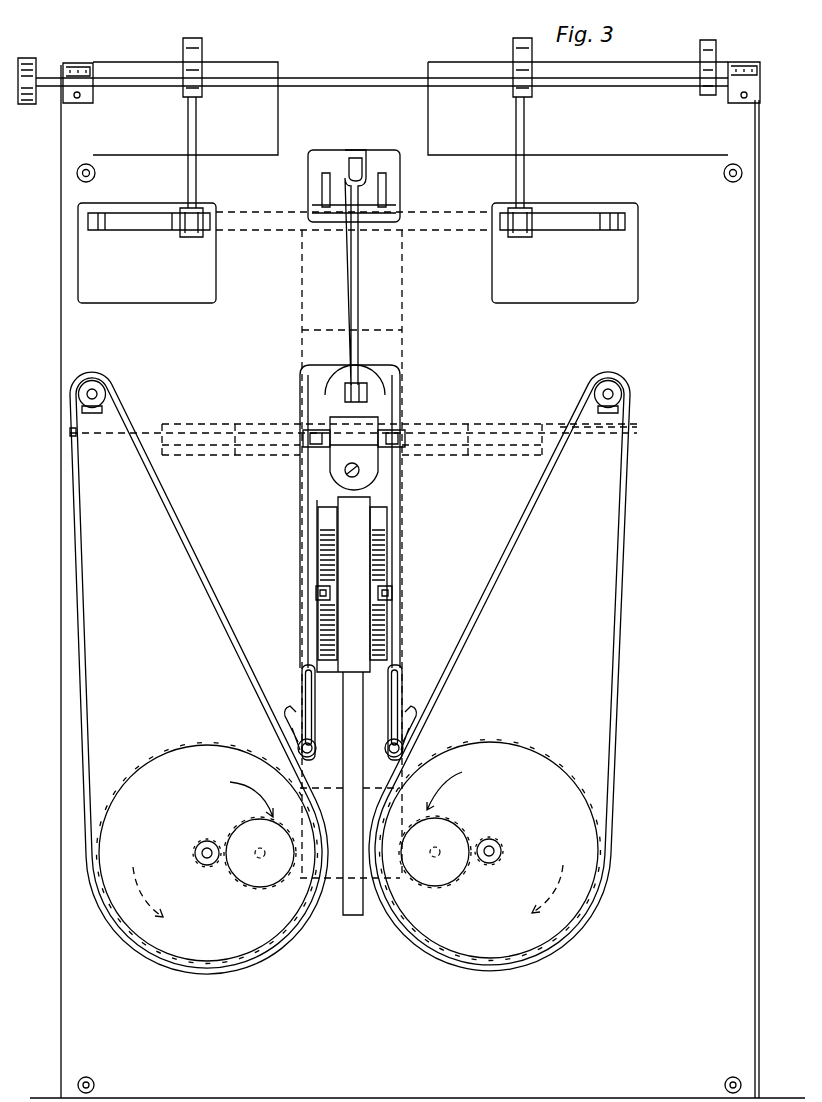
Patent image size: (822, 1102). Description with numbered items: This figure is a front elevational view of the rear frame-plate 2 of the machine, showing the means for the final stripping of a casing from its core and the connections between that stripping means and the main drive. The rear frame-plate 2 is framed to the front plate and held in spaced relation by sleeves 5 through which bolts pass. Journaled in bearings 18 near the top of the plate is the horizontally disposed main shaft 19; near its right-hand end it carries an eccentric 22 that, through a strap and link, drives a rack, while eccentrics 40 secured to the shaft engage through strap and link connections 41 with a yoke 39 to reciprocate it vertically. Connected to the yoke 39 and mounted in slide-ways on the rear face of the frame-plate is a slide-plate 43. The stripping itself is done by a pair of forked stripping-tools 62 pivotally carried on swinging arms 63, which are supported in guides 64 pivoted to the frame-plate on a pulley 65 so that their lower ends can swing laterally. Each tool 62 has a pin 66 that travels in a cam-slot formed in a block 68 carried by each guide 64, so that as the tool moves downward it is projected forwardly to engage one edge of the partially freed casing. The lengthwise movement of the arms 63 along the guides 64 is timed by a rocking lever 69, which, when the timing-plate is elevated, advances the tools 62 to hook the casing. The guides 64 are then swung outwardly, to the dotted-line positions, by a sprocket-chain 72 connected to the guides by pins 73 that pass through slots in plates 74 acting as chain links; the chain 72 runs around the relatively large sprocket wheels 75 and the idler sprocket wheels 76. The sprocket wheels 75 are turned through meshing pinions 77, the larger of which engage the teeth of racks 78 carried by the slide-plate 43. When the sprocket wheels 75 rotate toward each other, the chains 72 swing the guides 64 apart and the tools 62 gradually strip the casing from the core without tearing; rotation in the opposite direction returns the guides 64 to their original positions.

The rear frame-plate 2 is at (630, 439).
The sleeves 5 is at (96, 175).
The bearings 18 is at (96, 71).
The main shaft 19 is at (616, 88).
The eccentric 22 is at (722, 42).
The yoke 39 is at (572, 225).
The eccentrics 40 is at (204, 63).
The strap and link connections 41 is at (197, 138).
The slide-plate 43 is at (405, 343).
The stripping-tools 62 is at (115, 432).
The swinging arms 63 is at (318, 388).
The guides 64 is at (310, 620).
The pulley 65 is at (358, 474).
The pin 66 is at (316, 589).
The block 68 is at (323, 552).
The rocking lever 69 is at (360, 152).
The sprocket-chain 72 is at (238, 683).
The pins 73 is at (300, 747).
The plates 74 is at (300, 687).
The sprocket wheels 75 is at (533, 765).
The idler sprocket wheels 76 is at (110, 384).
The pinions 77 is at (207, 839).
The racks 78 is at (297, 877).